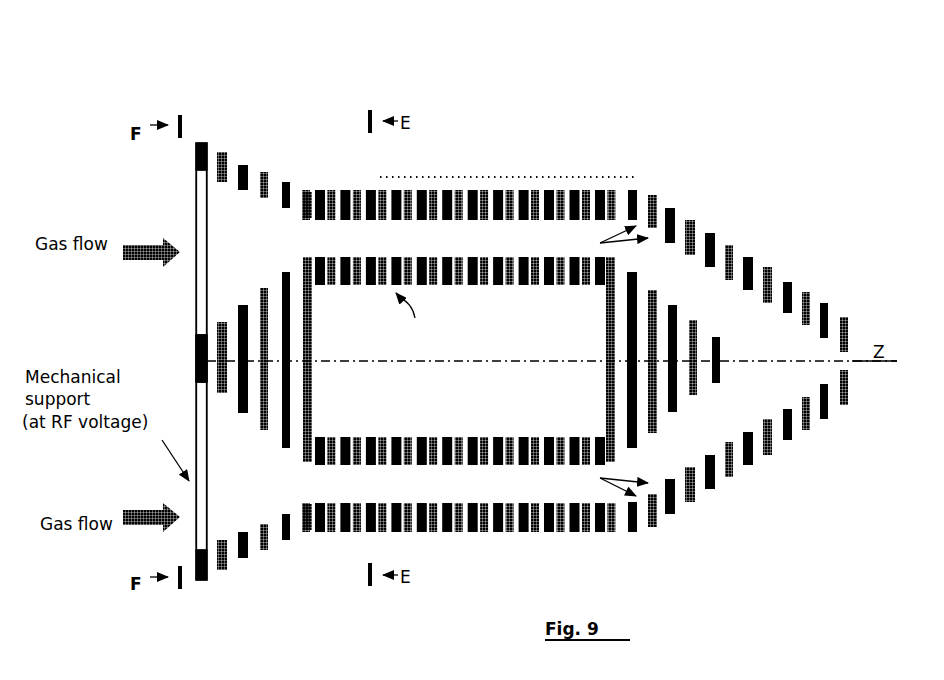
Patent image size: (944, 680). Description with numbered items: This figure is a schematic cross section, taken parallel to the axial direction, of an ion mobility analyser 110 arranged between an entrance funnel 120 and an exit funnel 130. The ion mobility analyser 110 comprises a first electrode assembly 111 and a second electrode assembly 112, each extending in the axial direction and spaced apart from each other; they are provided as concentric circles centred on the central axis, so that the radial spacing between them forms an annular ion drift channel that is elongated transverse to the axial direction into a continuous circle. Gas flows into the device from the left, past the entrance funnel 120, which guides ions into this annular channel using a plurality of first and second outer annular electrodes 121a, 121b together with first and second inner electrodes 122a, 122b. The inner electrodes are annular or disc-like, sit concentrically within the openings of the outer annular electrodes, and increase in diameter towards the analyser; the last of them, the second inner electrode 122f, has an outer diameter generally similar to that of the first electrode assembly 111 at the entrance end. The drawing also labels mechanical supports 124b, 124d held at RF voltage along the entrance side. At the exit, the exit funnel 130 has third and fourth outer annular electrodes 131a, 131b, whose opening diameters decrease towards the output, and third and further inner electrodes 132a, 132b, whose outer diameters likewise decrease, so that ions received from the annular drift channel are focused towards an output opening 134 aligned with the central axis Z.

The ion mobility analyser 110 is at (555, 90).
The first electrode assembly 111 is at (447, 430).
The second electrode assembly 112 is at (492, 183).
The entrance funnel 120 is at (274, 80).
The first outer annular electrode 121a is at (205, 149).
The second outer annular electrode 121b is at (222, 158).
The first inner electrode 122a is at (196, 352).
The second inner electrode 122b is at (217, 327).
The second inner electrode 122f is at (305, 458).
The mechanical support 124b is at (196, 202).
The mechanical support 124d is at (196, 543).
The exit funnel 130 is at (722, 190).
The third outer annular electrode 131a is at (716, 237).
The fourth outer annular electrode 131b is at (733, 257).
The third inner electrode 132a is at (637, 445).
The further inner electrode 132b is at (655, 417).
The output opening 134 is at (866, 370).